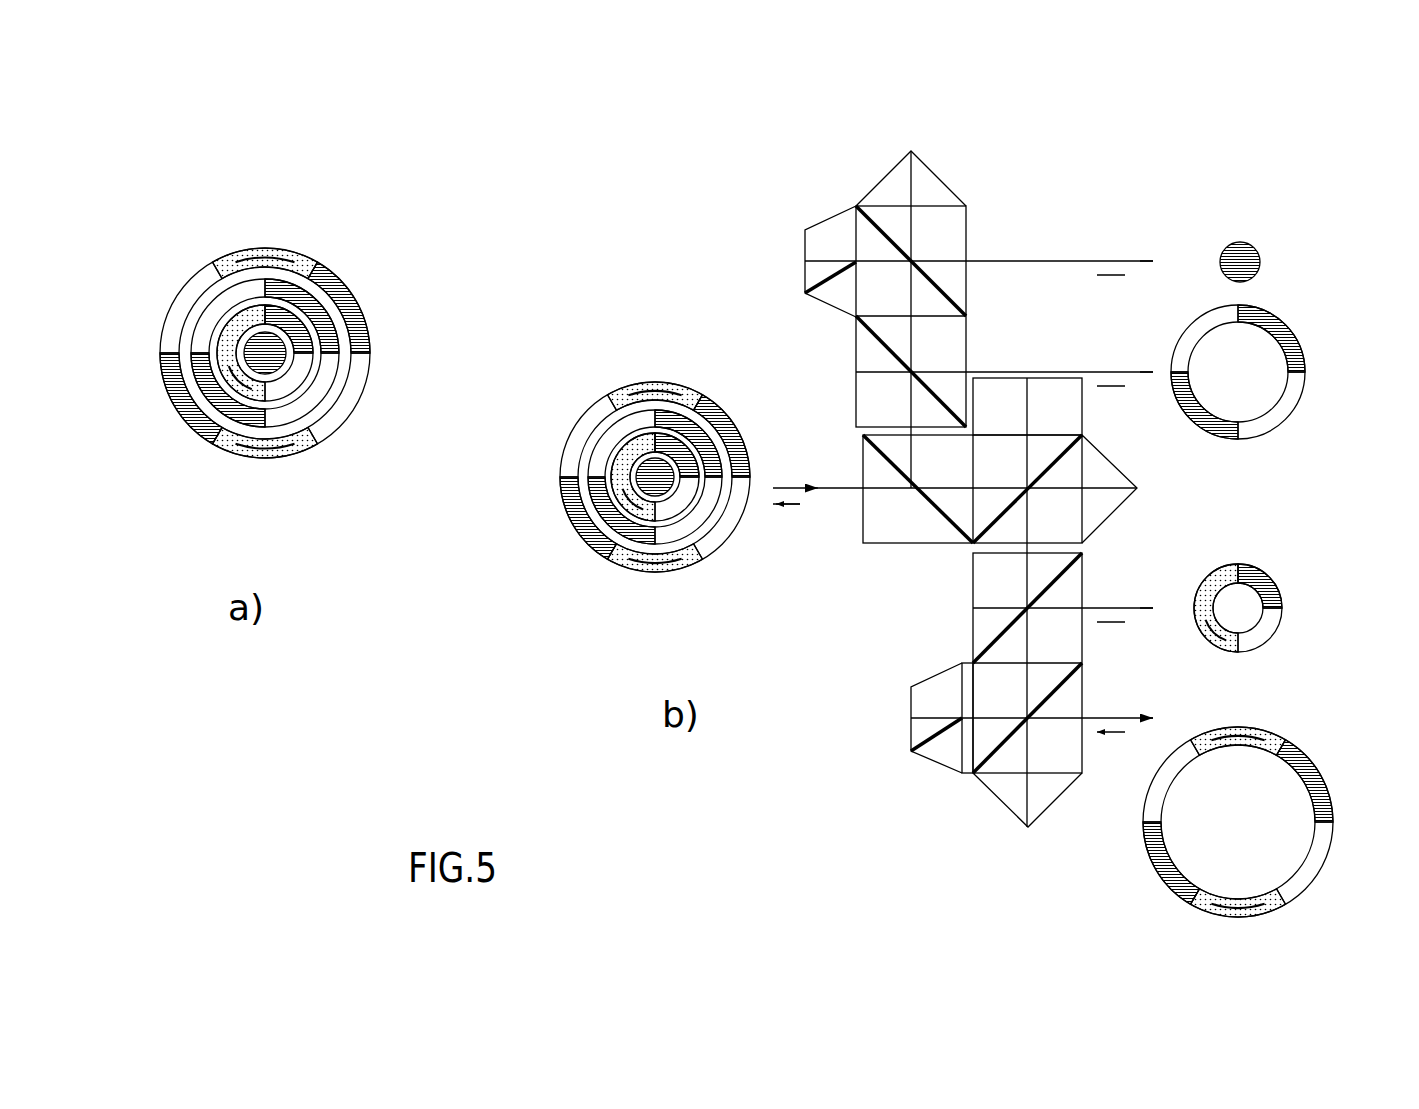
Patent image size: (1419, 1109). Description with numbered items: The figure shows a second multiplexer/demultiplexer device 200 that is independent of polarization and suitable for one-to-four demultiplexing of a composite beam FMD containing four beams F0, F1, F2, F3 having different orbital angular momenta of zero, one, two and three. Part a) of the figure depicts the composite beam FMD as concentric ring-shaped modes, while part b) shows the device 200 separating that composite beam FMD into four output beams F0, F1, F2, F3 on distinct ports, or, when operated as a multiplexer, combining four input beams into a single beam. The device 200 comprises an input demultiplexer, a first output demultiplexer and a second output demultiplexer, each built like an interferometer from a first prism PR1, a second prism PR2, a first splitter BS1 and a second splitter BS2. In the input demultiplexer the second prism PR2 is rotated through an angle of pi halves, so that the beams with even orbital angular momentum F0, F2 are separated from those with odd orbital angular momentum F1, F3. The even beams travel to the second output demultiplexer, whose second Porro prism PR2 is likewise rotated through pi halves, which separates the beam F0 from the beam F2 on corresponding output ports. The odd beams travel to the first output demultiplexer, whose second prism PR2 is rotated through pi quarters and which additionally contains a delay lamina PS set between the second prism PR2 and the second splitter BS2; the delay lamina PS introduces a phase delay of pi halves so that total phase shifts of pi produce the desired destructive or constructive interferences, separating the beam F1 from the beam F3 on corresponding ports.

The second multiplexer/demultiplexer device 200 is at (873, 912).
The composite beam FMD is at (455, 382).
The beam with orbital angular momentum l=0 F0 is at (280, 335).
The beam with orbital angular momentum l=1 F1 is at (298, 362).
The beam with orbital angular momentum l=2 F2 is at (318, 380).
The beam with orbital angular momentum l=3 F3 is at (330, 418).
The first prism PR1 is at (888, 172).
The second prism PR2 is at (823, 221).
The first splitter BS1 is at (965, 350).
The second splitter BS2 is at (965, 238).
The delay lamina PS is at (966, 778).